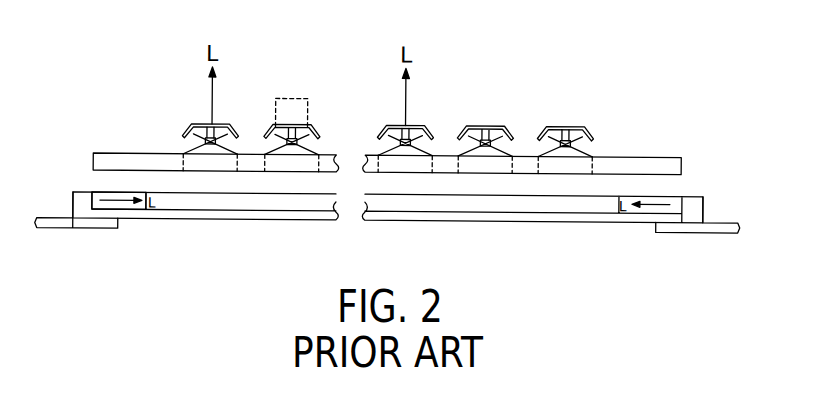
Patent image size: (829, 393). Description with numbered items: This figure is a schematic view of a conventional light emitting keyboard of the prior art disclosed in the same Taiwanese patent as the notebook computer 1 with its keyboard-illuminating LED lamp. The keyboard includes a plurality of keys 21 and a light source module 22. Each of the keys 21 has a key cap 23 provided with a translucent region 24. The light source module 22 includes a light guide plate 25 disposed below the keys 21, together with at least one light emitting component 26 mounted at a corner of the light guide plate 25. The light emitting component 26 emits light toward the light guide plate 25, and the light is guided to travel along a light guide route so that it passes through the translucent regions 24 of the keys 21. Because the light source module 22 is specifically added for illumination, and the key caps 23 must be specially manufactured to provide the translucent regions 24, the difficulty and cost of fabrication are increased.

The notebook computer 1 is at (641, 94).
The keys 21 is at (606, 142).
The light source module 22 is at (711, 196).
The key cap 23 is at (485, 123).
The translucent region 24 is at (292, 97).
The light guide plate 25 is at (105, 194).
The light emitting component 26 is at (80, 202).